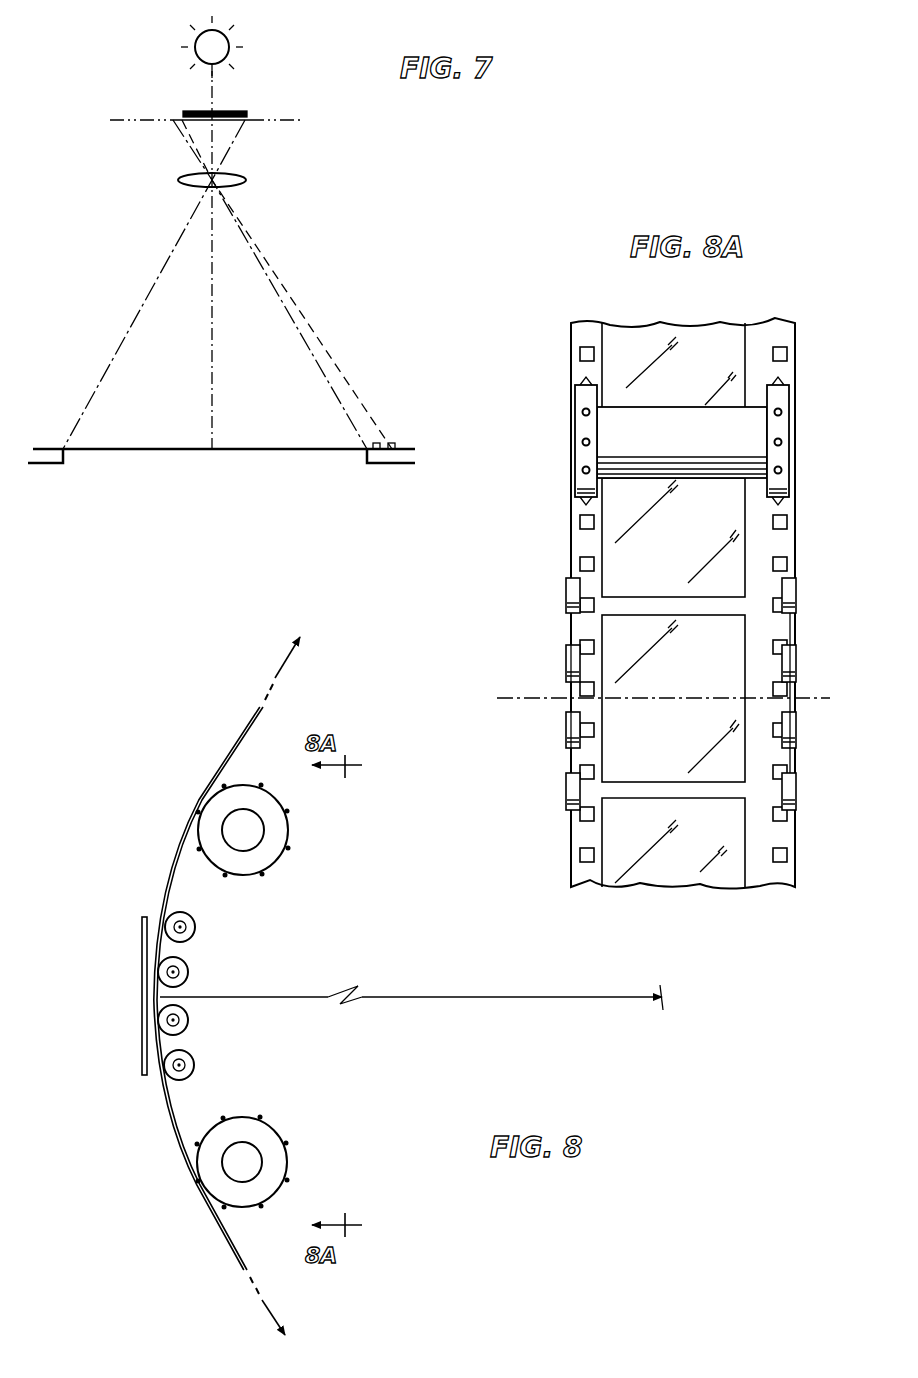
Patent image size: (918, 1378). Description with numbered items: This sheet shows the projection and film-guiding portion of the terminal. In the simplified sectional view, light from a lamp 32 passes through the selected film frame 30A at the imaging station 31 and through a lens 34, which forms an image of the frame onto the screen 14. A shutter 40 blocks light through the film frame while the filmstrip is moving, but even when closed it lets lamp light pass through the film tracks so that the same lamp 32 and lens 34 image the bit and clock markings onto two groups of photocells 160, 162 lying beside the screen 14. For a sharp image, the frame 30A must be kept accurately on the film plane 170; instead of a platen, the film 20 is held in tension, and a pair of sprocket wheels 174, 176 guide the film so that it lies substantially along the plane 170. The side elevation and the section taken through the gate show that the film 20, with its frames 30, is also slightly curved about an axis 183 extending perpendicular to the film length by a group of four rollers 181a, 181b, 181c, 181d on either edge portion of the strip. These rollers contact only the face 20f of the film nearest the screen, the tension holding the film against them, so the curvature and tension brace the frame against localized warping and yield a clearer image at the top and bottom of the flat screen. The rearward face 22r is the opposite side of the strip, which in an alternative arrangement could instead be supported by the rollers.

In FIG. 7, the screen 14 is at (291, 451).
In FIG. 8A, the film 20 is at (566, 873).
In FIG. 8, the film 20 is at (170, 1100).
In FIG. 8, the face of the film nearest the screen 20f is at (186, 1120).
In FIG. 8, the film rear reference surface 22r is at (190, 1150).
In FIG. 8A, the film frames 30 is at (604, 545).
In FIG. 7, the selected film frame 30A is at (248, 121).
In FIG. 8A, the selected film frame 30A is at (674, 690).
In FIG. 8, the imaging station 31 is at (284, 982).
In FIG. 7, the lamp 32 is at (194, 50).
In FIG. 7, the lens 34 is at (178, 180).
In FIG. 7, the shutter 40 is at (186, 110).
In FIG. 8, the shutter 40 is at (142, 999).
In FIG. 7, the photocell group 160 is at (376, 442).
In FIG. 7, the photocell group 162 is at (395, 444).
In FIG. 7, the film plane 170 is at (112, 119).
In FIG. 8, the sprocket wheel 174 is at (285, 1146).
In FIG. 8A, the sprocket wheel 176 is at (575, 463).
In FIG. 8, the sprocket wheel 176 is at (284, 848).
In FIG. 8A, the roller 181a is at (566, 605).
In FIG. 8, the roller 181a is at (196, 925).
In FIG. 8A, the roller 181b is at (566, 668).
In FIG. 8, the roller 181b is at (189, 972).
In FIG. 8A, the roller 181c is at (566, 737).
In FIG. 8, the roller 181c is at (189, 1020).
In FIG. 8A, the roller 181d is at (566, 803).
In FIG. 8, the roller 181d is at (195, 1065).
In FIG. 8A, the axis 183 is at (536, 700).
In FIG. 8, the axis 183 is at (668, 995).